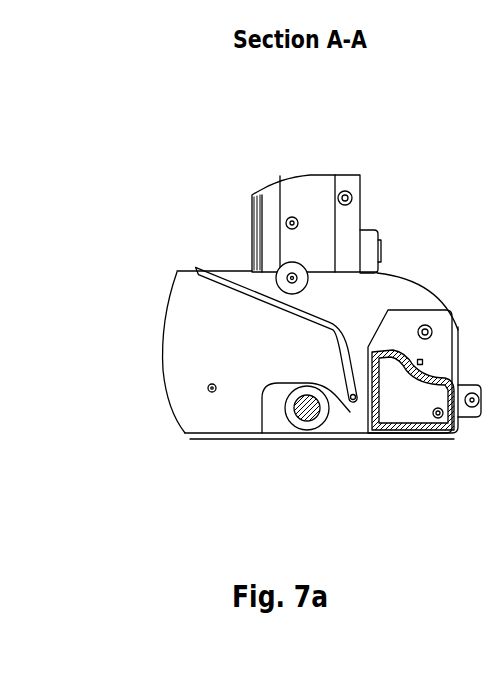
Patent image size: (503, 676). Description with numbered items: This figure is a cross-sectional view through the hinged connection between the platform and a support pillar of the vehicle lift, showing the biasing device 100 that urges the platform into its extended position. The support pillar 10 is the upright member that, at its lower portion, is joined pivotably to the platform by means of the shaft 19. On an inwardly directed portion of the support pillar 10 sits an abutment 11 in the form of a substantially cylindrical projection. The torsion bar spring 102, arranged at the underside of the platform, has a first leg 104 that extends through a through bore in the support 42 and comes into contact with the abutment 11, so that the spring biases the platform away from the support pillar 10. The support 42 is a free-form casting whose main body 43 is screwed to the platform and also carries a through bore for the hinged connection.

The biasing device 100 is at (145, 218).
The support pillar 10 is at (247, 195).
The abutment 11 is at (308, 267).
The first leg 104 is at (239, 302).
The torsion bar spring 102 is at (308, 329).
The shaft 19 is at (308, 410).
The main body 43 is at (357, 412).
The support 42 is at (419, 414).